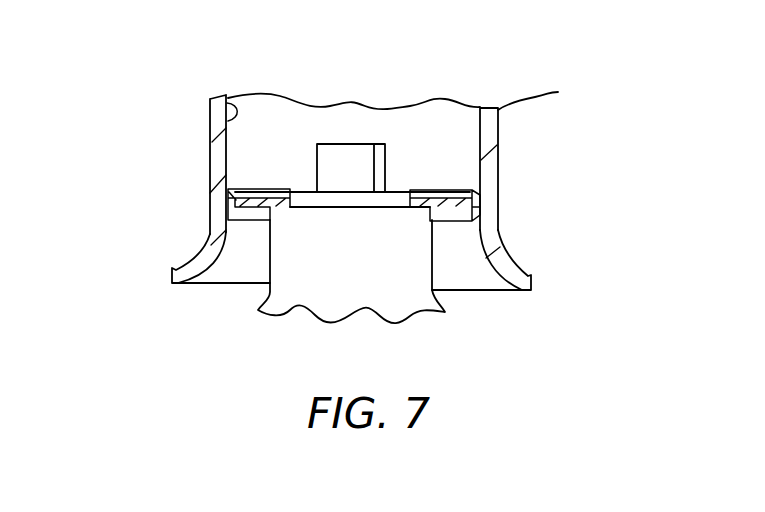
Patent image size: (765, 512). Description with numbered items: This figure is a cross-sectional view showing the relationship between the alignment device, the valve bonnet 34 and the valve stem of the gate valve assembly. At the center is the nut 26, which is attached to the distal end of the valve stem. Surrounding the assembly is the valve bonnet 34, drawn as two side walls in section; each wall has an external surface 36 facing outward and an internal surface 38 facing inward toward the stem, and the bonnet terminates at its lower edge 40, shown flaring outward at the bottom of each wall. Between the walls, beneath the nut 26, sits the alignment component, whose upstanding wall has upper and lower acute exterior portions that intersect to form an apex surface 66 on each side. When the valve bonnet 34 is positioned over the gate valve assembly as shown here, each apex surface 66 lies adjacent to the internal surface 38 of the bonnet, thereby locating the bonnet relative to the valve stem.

The nut 26 is at (352, 158).
The valve bonnet 34 is at (212, 135).
The external surface 36 is at (499, 128).
The internal surface 38 is at (212, 100).
The lower edge 40 is at (172, 284).
The apex surface 66 is at (210, 200).